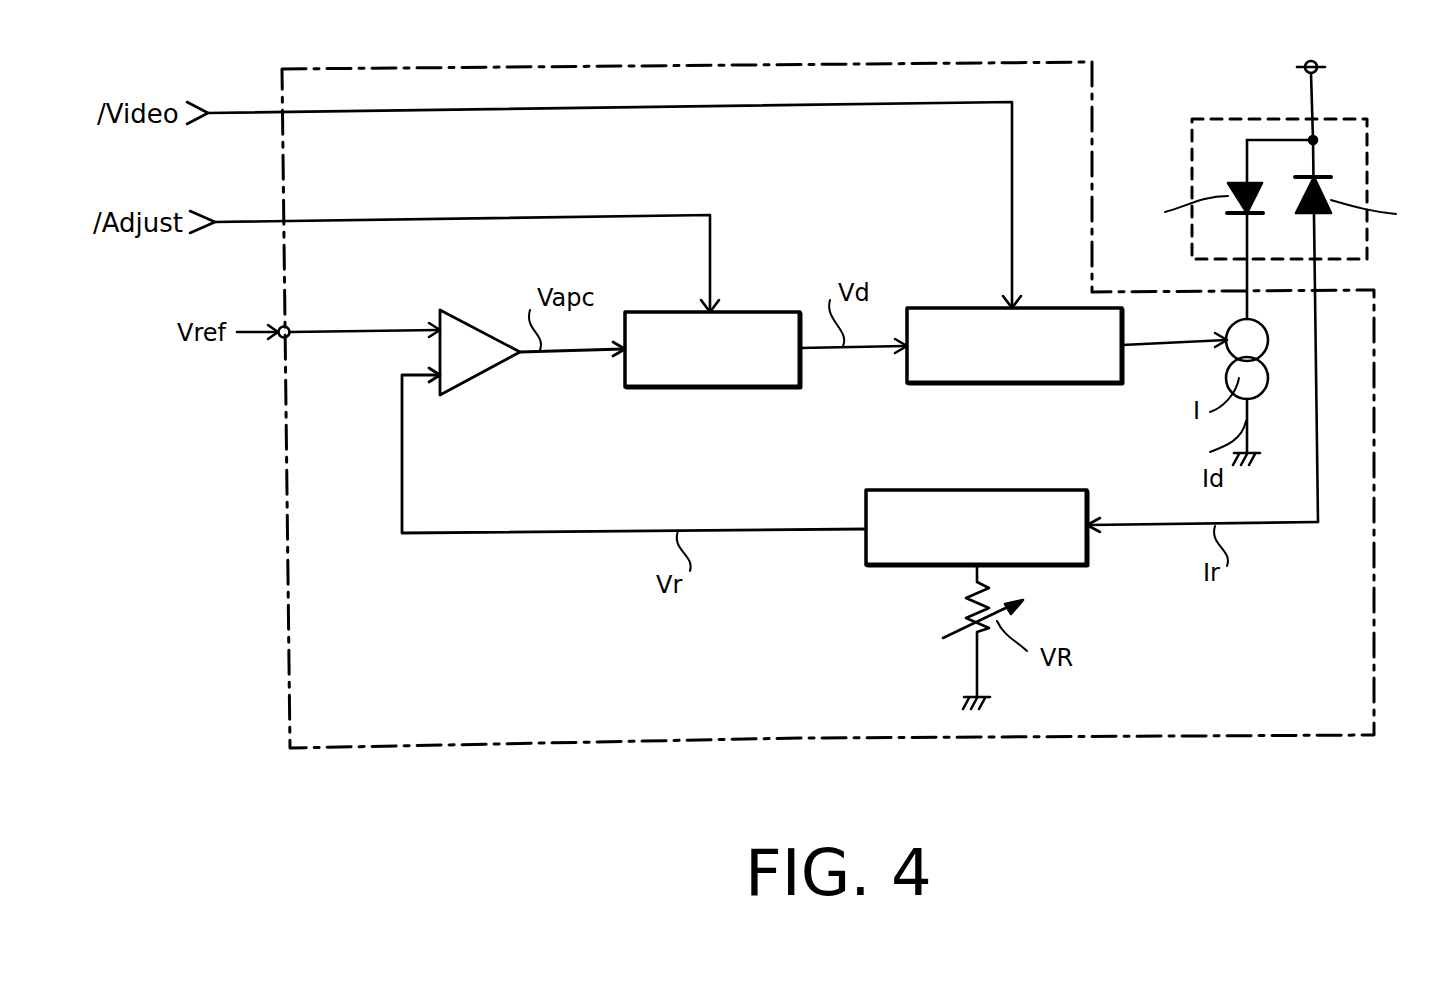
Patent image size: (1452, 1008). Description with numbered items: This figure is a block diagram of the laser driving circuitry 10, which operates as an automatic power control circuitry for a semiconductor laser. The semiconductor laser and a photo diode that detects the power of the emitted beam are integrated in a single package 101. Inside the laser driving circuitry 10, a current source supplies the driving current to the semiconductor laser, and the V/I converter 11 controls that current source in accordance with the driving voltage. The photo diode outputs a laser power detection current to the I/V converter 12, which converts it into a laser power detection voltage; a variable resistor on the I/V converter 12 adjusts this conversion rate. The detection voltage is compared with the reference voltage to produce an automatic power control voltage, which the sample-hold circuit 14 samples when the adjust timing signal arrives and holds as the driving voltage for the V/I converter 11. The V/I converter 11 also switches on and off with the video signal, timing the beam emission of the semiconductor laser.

The laser driving circuitry 10 is at (1375, 615).
The voltage-to-current (V/I) converter 11 is at (1043, 309).
The current-to-voltage (I/V) converter 12 is at (985, 490).
The sample-hold (S/H) circuit 14 is at (730, 388).
The single package 101 is at (1210, 118).